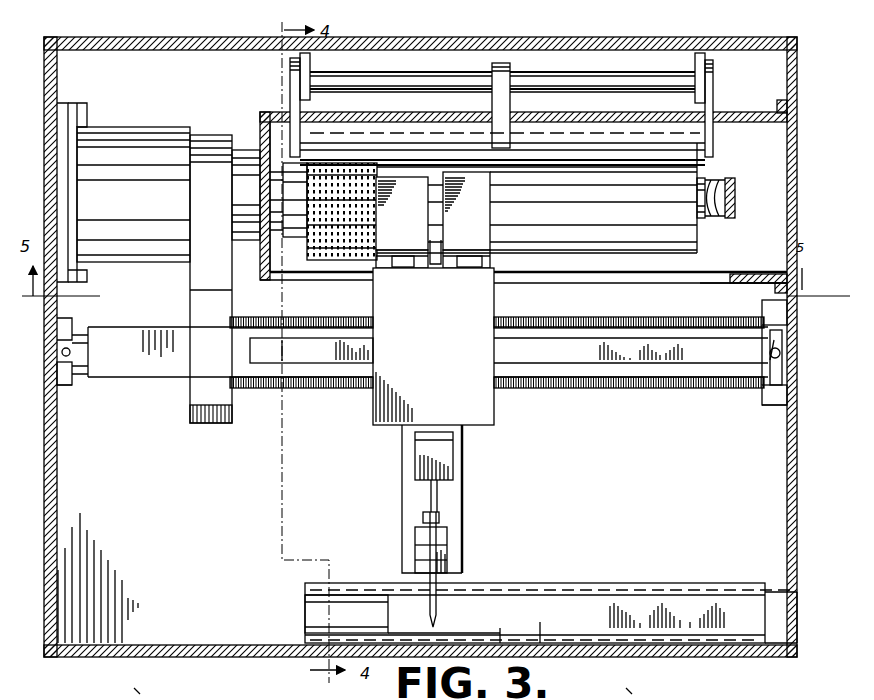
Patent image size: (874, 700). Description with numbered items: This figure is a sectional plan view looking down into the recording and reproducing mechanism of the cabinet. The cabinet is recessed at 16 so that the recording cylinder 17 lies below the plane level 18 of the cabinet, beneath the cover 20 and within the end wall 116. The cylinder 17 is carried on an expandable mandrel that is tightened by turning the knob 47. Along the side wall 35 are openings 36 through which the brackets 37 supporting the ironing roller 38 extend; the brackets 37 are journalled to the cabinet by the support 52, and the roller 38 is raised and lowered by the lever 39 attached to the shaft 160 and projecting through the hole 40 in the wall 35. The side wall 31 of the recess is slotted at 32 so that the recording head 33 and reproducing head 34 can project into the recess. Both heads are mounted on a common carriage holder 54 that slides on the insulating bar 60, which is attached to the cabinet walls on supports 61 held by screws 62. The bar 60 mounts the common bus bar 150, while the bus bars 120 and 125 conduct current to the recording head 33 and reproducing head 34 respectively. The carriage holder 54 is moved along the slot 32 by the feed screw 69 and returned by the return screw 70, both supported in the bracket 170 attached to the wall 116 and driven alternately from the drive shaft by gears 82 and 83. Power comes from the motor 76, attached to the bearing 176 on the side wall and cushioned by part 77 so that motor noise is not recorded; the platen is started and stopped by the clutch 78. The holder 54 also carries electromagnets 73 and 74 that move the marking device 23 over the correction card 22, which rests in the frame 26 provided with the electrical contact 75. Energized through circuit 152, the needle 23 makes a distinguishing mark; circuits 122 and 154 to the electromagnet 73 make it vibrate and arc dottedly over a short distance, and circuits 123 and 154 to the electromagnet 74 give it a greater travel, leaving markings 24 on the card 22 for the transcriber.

The end wall 116 is at (787, 468).
The bearing 176 is at (62, 104).
The cushioning part 77 is at (80, 104).
The motor 76 is at (130, 131).
The gear 82 is at (211, 279).
The gear 83 is at (211, 262).
The clutch 78 is at (304, 205).
The side wall 35 is at (600, 118).
The openings 36 is at (268, 113).
The brackets 37 is at (290, 77).
The support 52 is at (310, 70).
The shaft 160 is at (372, 76).
The lever 39 is at (520, 72).
The hole 40 is at (492, 116).
The ironing roller 38 is at (692, 134).
The recording cylinder 17 is at (688, 242).
The knob 47 is at (737, 199).
The recording head 33 is at (408, 222).
The reproducing head 34 is at (466, 220).
The slot 32 is at (597, 280).
The recess 16 is at (732, 275).
The side wall 31 is at (760, 284).
The carriage holder 54 is at (433, 346).
The bar 60 is at (428, 352).
The common bus bar 150 is at (311, 350).
The return screw 70 is at (576, 322).
The feed screw 69 is at (560, 392).
The bus bar 125 is at (80, 333).
The bus bar 120 is at (76, 378).
The supports 61 is at (70, 386).
The screws 62 is at (763, 395).
The bracket 170 is at (775, 408).
The electromagnet 73 is at (470, 442).
The circuit 122 is at (390, 450).
The circuit 154 is at (412, 452).
The circuit 152 is at (423, 516).
The circuit 123 is at (412, 539).
The electromagnet 74 is at (418, 563).
The marking device 23 is at (442, 540).
The correction card 22 is at (567, 618).
The frame 26 is at (672, 590).
The electrical contact 75 is at (318, 613).
The markings 24 is at (452, 623).
The cover 20 is at (149, 692).
The plane level 18 is at (641, 692).